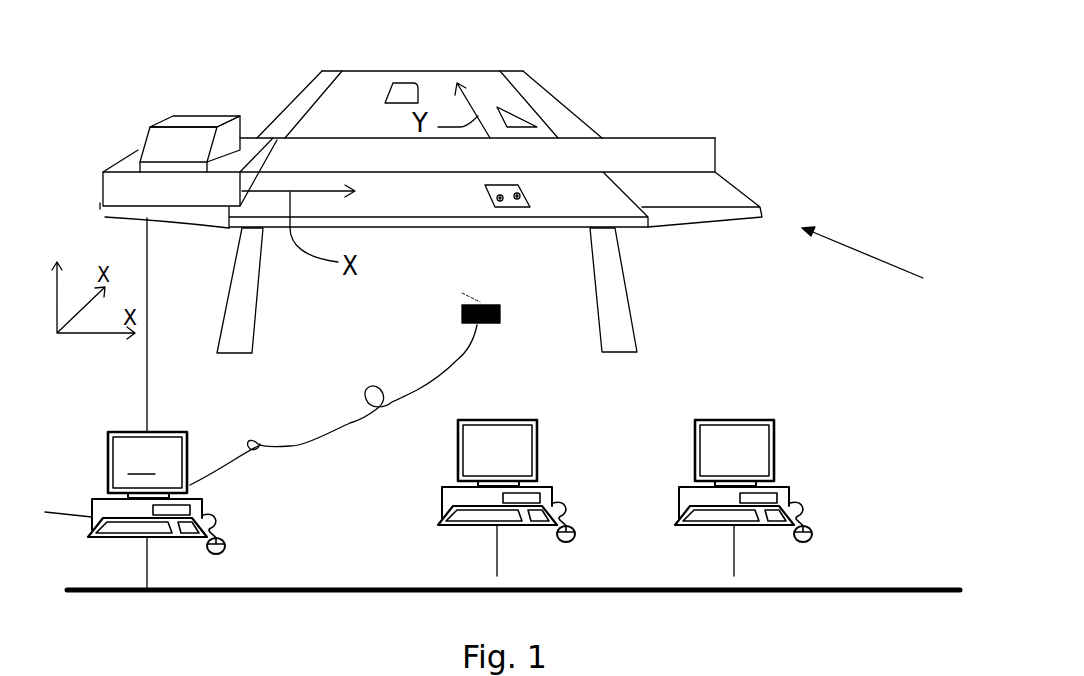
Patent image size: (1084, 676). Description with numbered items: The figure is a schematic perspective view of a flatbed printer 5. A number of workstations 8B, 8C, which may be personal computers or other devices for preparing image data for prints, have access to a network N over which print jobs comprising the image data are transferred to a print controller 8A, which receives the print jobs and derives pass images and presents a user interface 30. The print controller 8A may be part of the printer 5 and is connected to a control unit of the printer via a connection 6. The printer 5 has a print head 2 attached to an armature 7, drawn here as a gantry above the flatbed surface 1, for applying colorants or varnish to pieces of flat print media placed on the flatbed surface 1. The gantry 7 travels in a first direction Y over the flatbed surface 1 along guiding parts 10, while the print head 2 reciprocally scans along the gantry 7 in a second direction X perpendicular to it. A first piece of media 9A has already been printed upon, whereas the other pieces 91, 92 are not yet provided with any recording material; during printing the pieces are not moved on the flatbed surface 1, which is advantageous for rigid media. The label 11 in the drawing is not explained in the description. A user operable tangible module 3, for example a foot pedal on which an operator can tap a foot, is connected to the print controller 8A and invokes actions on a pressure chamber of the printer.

The flatbed surface 1 is at (353, 117).
The print head 2 is at (165, 118).
The user operable tangible module 3 is at (487, 325).
The printer 5 is at (873, 260).
The connection 6 is at (150, 367).
The armature 7 is at (663, 148).
The print controller 8A is at (158, 510).
The workstation 8B is at (547, 495).
The workstation 8C is at (782, 495).
The first piece of media 9A is at (510, 207).
The guiding parts 10 is at (268, 128).
The work surface 11 is at (332, 87).
The user interface 30 is at (141, 463).
The piece of media 91 is at (507, 110).
The piece of media 92 is at (407, 93).
The network N is at (930, 587).